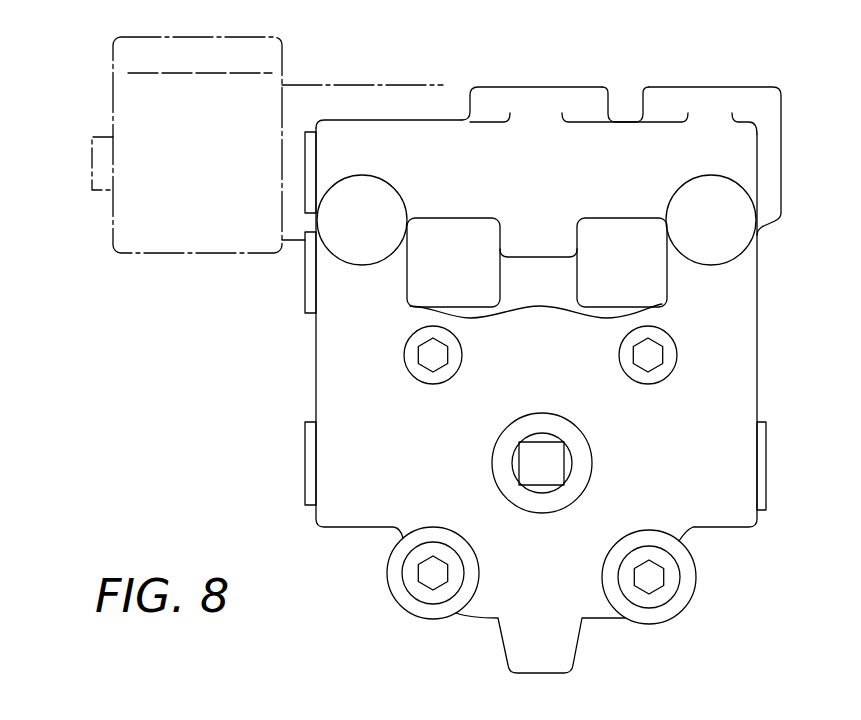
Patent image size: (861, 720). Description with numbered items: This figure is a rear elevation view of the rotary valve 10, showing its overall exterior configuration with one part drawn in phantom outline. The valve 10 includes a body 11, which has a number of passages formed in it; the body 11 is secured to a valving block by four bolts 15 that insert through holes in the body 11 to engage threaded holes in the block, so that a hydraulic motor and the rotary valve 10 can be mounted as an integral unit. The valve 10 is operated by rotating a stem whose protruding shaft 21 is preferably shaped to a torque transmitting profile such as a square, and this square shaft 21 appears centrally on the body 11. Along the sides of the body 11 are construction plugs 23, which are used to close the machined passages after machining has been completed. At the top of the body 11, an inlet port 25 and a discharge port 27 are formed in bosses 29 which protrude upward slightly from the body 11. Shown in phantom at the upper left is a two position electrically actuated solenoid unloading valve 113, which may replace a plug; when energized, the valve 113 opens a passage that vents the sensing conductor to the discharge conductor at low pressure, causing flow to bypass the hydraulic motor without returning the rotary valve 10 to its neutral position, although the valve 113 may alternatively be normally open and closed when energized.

The rotary valve 10 is at (800, 665).
The body 11 is at (758, 272).
The bolts 15 is at (433, 349).
The protruding shaft 21 is at (553, 469).
The construction plugs 23 is at (305, 180).
The inlet port 25 is at (720, 86).
The discharge port 27 is at (520, 86).
The bosses 29 is at (657, 86).
The solenoid unloading valve 113 is at (282, 45).